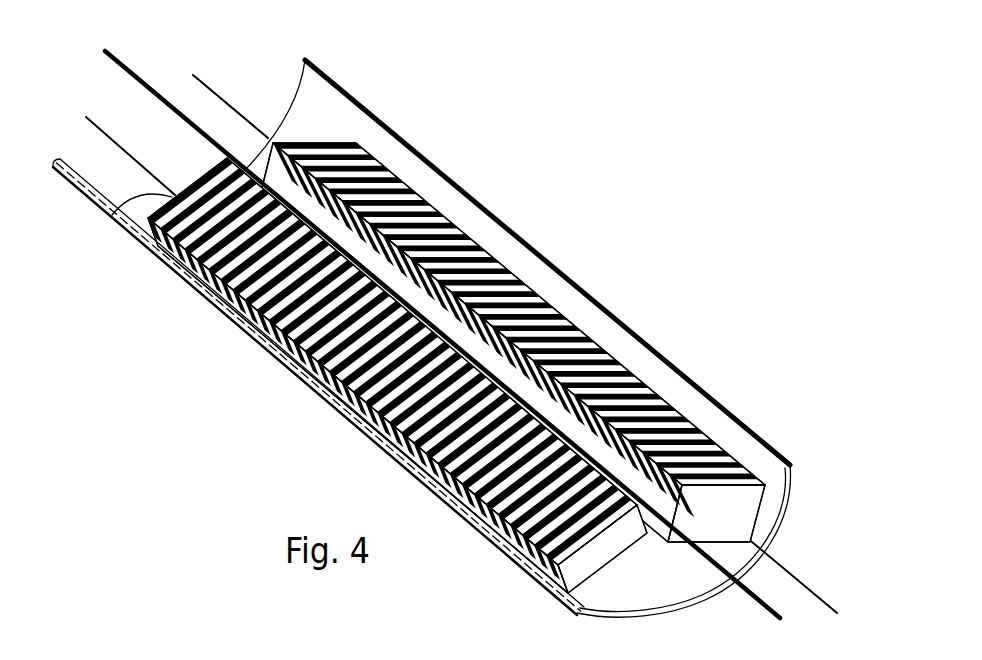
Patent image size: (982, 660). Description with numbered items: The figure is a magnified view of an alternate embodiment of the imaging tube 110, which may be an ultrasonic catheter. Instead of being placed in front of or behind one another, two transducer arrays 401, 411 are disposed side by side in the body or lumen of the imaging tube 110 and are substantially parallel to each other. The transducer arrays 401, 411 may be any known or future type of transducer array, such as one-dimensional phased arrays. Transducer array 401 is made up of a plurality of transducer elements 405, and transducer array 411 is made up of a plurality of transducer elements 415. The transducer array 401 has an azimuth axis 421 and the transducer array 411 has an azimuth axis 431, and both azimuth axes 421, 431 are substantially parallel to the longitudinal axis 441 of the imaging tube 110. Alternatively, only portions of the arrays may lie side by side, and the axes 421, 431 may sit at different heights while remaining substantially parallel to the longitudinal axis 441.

The imaging tube 110 is at (650, 342).
The transducer array 401 is at (512, 307).
The transducer elements 405 is at (417, 190).
The transducer array 411 is at (112, 215).
The transducer elements 415 is at (228, 318).
The azimuth axis 421 is at (222, 92).
The azimuth axis 431 is at (110, 136).
The longitudinal axis 441 is at (143, 80).